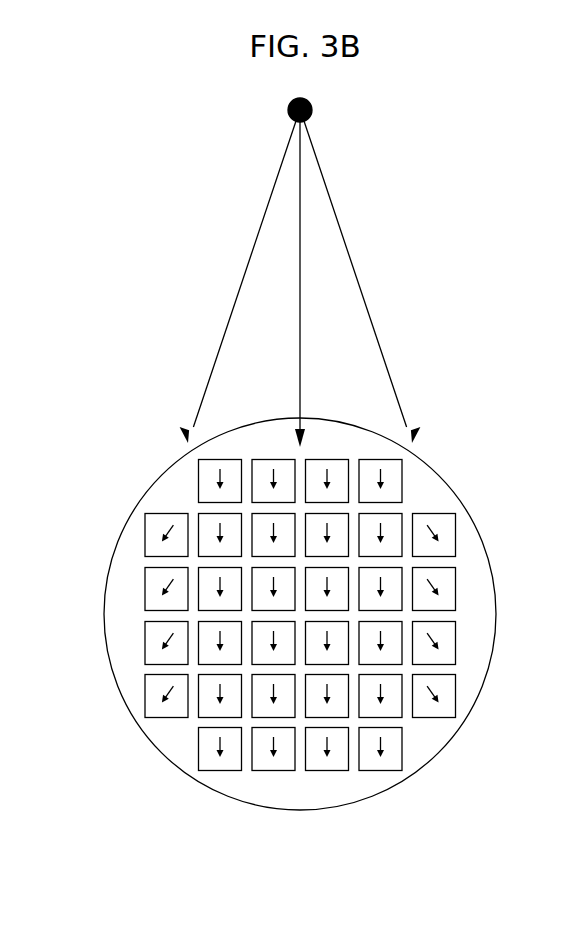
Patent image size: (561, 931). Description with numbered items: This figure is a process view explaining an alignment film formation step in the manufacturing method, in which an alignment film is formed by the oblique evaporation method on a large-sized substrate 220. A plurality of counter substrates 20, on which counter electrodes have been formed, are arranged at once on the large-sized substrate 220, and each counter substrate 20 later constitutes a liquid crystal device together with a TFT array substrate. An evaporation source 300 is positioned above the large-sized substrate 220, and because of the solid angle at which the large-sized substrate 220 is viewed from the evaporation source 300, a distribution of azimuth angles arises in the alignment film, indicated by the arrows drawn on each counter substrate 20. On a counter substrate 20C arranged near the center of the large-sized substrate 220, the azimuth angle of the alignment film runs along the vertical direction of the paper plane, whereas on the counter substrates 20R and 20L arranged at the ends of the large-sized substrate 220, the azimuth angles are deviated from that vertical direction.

The evaporation source 300 is at (313, 110).
The large-sized substrate 220 is at (152, 745).
The counter substrate 20 is at (280, 777).
The counter substrate arranged in the vicinity of a center 20C is at (288, 659).
The counter substrate arranged on an end 20R is at (146, 683).
The counter substrate arranged on an end 20L is at (455, 688).